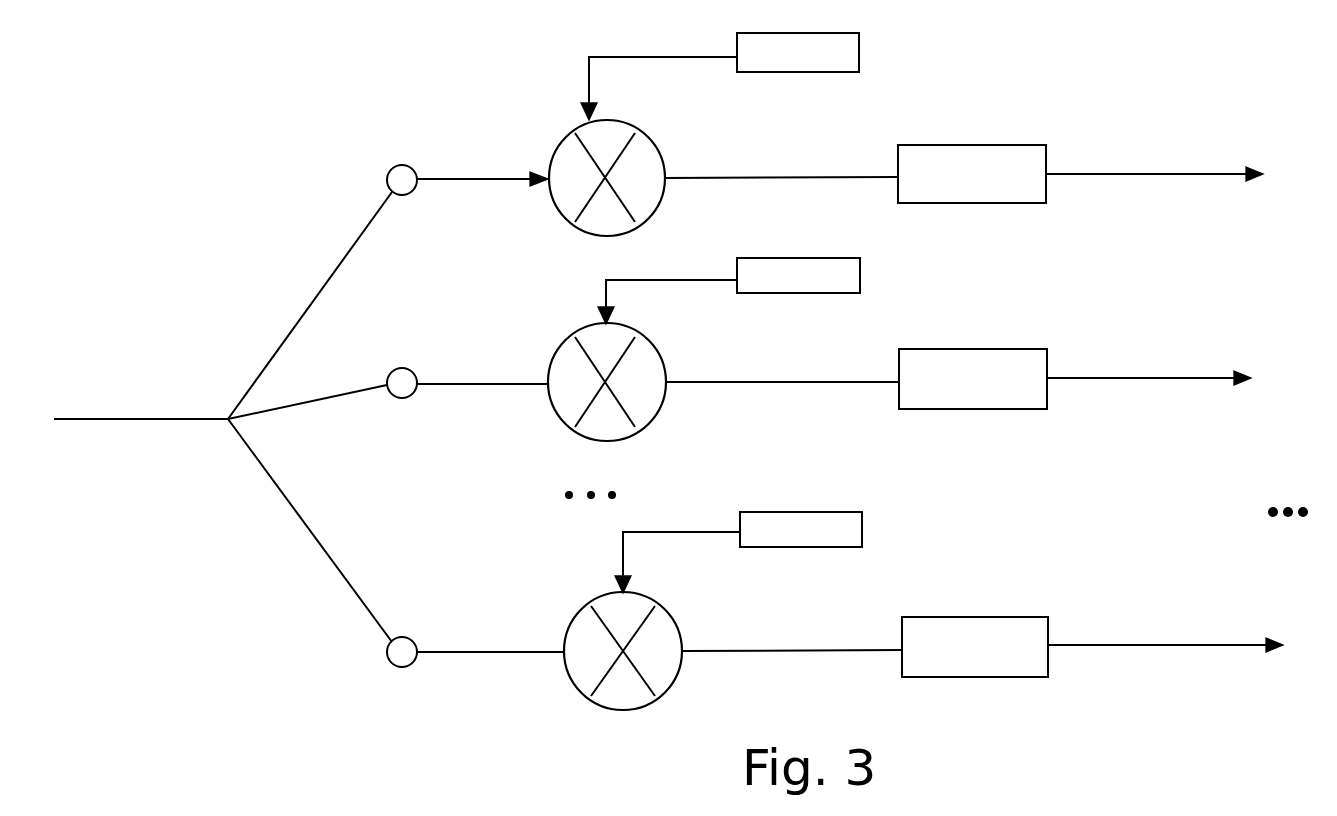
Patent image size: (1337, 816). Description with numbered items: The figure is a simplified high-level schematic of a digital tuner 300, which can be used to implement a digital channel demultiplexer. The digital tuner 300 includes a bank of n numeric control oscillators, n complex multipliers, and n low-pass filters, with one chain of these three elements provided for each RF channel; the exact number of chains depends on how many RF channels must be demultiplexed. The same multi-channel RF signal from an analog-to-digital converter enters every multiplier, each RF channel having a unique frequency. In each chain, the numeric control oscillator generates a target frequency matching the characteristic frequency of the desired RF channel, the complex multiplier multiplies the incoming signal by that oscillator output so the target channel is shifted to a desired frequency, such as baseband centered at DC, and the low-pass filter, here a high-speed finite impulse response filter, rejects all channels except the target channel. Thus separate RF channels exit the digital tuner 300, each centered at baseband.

The digital tuner 300 is at (687, 360).